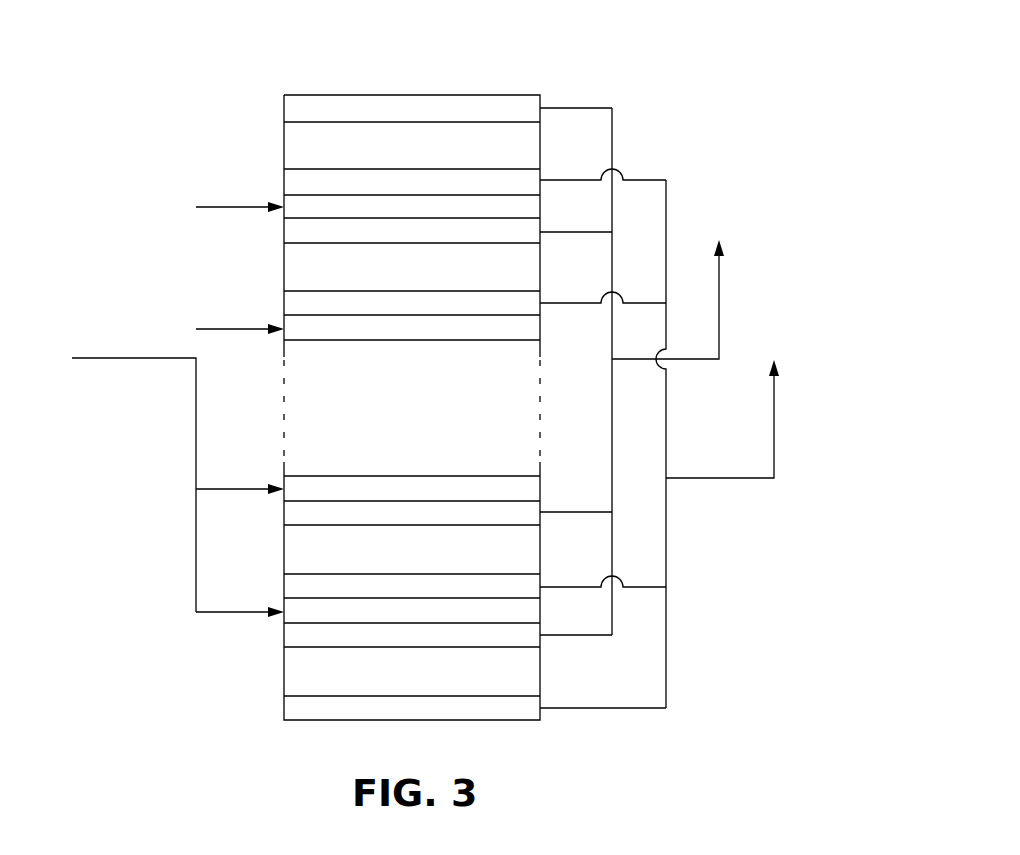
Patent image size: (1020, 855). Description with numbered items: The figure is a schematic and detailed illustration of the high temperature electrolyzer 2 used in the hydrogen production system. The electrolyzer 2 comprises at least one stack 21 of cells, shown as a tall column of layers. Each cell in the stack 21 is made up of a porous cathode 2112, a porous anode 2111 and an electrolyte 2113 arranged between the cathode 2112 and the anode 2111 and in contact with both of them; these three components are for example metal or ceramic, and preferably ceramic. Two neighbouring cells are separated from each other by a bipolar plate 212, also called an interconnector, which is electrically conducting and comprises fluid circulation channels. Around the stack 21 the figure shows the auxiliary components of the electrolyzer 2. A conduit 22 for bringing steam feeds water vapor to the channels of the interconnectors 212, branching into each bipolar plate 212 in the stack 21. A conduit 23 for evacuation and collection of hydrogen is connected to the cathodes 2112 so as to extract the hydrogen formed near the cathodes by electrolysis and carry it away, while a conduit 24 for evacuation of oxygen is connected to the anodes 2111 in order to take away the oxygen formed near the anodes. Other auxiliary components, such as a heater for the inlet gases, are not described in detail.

The high temperature electrolyzer 2 is at (150, 745).
The stack of cells 21 is at (383, 84).
The conduit for bringing steam 22 is at (93, 360).
The conduit for evacuation and collection of hydrogen 23 is at (720, 335).
The conduit for evacuation of oxygen 24 is at (776, 455).
The bipolar plate 212 is at (283, 203).
The porous anode 2111 is at (540, 172).
The porous cathode 2112 is at (465, 95).
The electrolyte 2113 is at (540, 140).